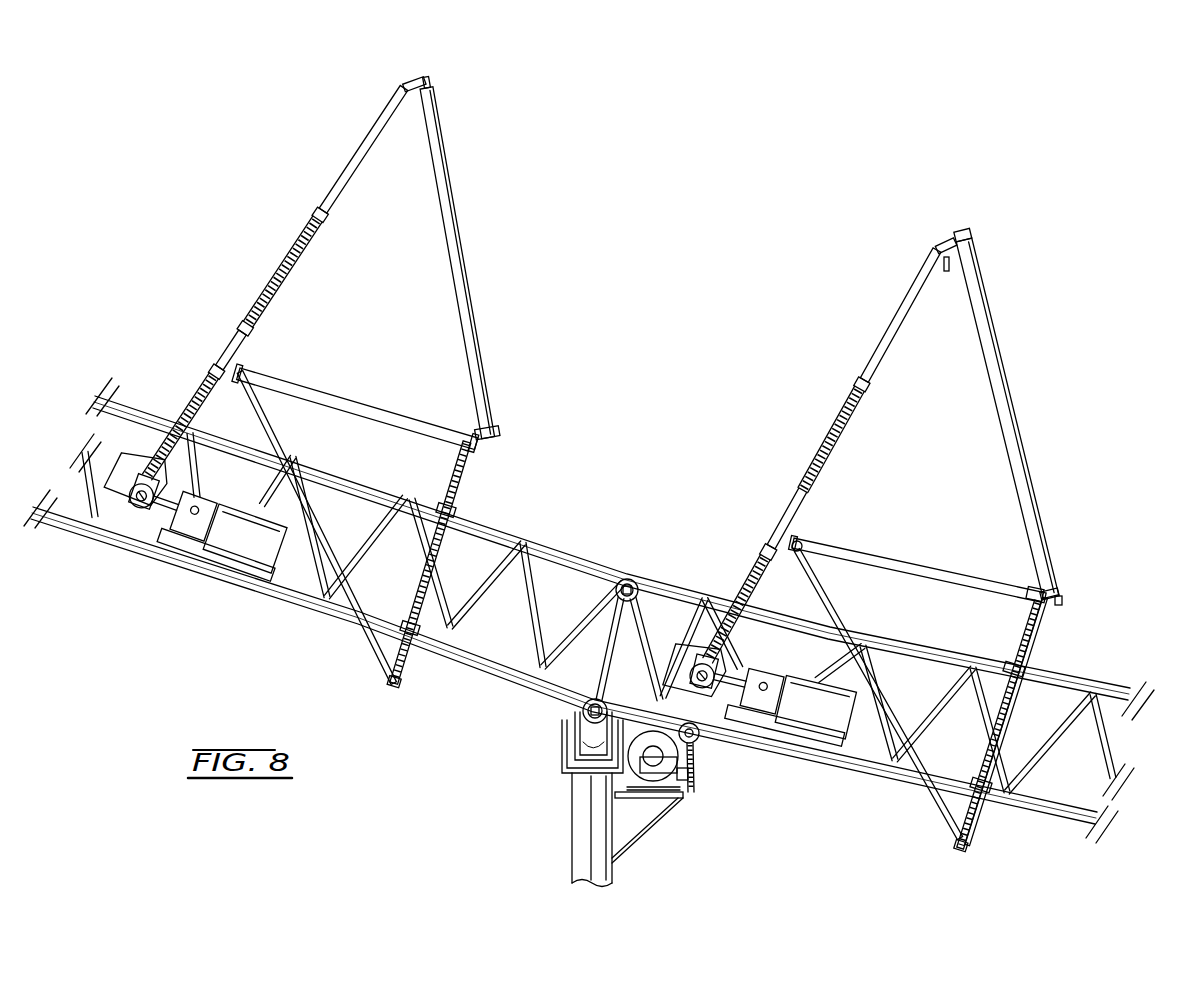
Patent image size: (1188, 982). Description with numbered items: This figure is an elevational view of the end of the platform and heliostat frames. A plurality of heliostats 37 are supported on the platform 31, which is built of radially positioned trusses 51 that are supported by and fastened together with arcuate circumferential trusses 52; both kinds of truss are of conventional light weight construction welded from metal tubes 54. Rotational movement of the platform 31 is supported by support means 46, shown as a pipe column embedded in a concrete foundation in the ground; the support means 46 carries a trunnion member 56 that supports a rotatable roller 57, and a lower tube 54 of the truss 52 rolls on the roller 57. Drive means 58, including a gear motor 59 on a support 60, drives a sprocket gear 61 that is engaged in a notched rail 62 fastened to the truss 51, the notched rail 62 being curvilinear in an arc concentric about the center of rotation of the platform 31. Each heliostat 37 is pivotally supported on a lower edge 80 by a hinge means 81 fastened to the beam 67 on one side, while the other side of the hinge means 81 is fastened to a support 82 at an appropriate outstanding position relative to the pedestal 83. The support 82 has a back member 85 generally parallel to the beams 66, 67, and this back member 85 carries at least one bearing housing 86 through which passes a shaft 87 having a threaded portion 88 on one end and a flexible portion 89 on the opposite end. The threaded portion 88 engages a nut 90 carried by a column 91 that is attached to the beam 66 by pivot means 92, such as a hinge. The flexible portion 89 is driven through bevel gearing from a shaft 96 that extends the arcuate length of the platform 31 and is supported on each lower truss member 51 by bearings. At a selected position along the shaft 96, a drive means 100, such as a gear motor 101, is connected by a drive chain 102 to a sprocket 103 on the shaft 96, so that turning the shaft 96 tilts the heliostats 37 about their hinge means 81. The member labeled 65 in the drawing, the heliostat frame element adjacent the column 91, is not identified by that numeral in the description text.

The platform 31 is at (589, 610).
The heliostat 37 is at (482, 292).
The support means 46 is at (585, 820).
The truss 51 is at (523, 521).
The arcuate circumferential truss 52 is at (640, 582).
The metal tube 54 is at (531, 607).
The trunnion member 56 is at (562, 758).
The rotatable roller 57 is at (575, 742).
The drive means 58 is at (653, 742).
The gear motor 59 is at (683, 796).
The support 60 is at (648, 805).
The sprocket gear 61 is at (690, 774).
The notched rail 62 is at (702, 738).
The panel frame 65 is at (972, 260).
The beam 66 is at (950, 243).
The beam 67 is at (1058, 596).
The lower edge 80 is at (1056, 606).
The hinge means 81 is at (1028, 590).
The support 82 is at (905, 570).
The pedestal 83 is at (1025, 645).
The back member 85 is at (803, 545).
The bearing housing 86 is at (788, 520).
The shaft 87 is at (770, 552).
The threaded portion 88 is at (845, 412).
The flexible portion 89 is at (758, 566).
The nut 90 is at (876, 384).
The column 91 is at (903, 312).
The pivot means 92 is at (946, 272).
The shaft 96 is at (697, 658).
The drive means 100 is at (822, 720).
The gear motor 101 is at (812, 695).
The drive chain 102 is at (735, 681).
The sprocket 103 is at (722, 672).